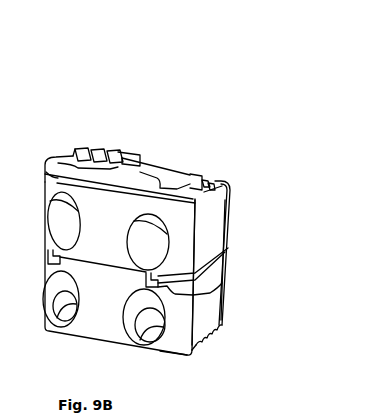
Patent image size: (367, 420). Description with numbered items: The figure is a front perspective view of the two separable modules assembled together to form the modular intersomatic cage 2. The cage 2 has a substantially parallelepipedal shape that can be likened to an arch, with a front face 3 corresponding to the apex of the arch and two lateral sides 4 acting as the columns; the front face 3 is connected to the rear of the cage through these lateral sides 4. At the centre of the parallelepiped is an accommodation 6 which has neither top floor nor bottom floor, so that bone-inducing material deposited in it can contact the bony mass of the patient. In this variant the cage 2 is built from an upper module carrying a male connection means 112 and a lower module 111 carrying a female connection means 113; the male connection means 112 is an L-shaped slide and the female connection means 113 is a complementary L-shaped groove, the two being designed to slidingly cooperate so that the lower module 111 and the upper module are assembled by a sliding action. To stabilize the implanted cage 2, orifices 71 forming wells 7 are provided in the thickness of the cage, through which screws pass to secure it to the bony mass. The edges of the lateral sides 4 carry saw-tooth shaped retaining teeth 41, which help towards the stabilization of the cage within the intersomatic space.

The cage 2 is at (103, 77).
The front face 3 is at (97, 242).
The lateral sides 4 is at (210, 233).
The accommodation 6 is at (143, 170).
The wells 7 is at (62, 220).
The retaining teeth 41 is at (101, 150).
The orifices 71 is at (41, 305).
The lower module 111 is at (170, 346).
The male connection means 112 is at (175, 226).
The female connection means 113 is at (222, 283).